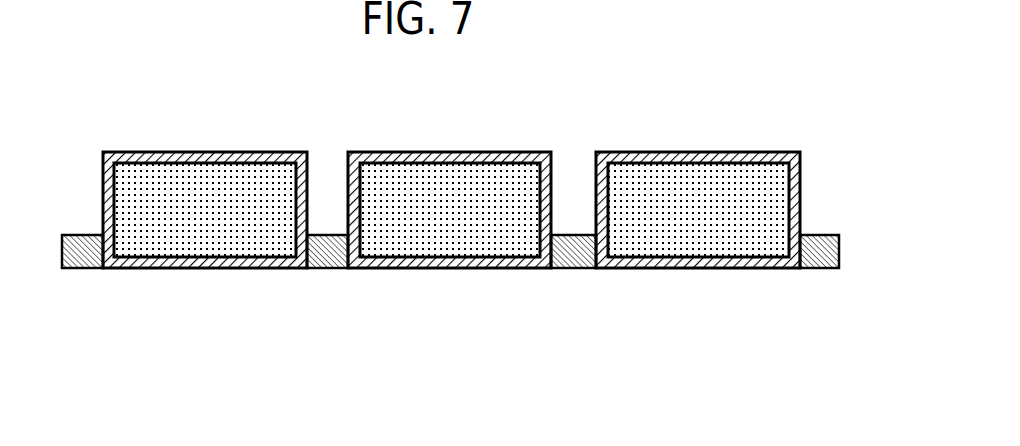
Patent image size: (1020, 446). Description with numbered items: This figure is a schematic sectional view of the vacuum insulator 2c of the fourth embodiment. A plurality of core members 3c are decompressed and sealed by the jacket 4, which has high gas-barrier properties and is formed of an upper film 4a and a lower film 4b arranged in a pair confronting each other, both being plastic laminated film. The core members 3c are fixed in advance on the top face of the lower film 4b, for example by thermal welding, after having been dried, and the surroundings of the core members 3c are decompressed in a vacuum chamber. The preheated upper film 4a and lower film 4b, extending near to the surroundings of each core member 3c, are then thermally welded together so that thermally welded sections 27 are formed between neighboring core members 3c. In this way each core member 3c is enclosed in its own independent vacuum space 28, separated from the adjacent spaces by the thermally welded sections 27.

The vacuum insulator 2c is at (197, 133).
The core member 3c is at (143, 202).
The jacket 4 is at (245, 153).
The upper film 4a is at (405, 153).
The lower film 4b is at (403, 268).
The thermally welded section 27 is at (78, 258).
The vacuum space 28 is at (268, 203).